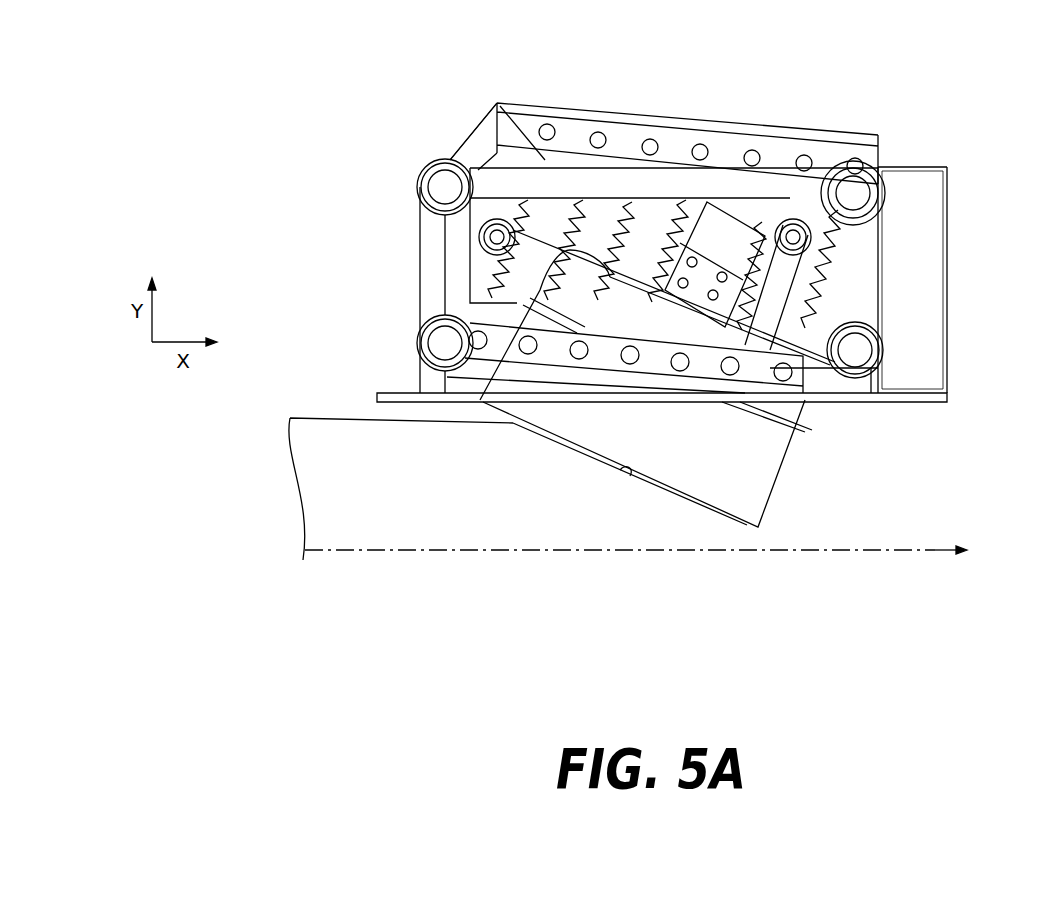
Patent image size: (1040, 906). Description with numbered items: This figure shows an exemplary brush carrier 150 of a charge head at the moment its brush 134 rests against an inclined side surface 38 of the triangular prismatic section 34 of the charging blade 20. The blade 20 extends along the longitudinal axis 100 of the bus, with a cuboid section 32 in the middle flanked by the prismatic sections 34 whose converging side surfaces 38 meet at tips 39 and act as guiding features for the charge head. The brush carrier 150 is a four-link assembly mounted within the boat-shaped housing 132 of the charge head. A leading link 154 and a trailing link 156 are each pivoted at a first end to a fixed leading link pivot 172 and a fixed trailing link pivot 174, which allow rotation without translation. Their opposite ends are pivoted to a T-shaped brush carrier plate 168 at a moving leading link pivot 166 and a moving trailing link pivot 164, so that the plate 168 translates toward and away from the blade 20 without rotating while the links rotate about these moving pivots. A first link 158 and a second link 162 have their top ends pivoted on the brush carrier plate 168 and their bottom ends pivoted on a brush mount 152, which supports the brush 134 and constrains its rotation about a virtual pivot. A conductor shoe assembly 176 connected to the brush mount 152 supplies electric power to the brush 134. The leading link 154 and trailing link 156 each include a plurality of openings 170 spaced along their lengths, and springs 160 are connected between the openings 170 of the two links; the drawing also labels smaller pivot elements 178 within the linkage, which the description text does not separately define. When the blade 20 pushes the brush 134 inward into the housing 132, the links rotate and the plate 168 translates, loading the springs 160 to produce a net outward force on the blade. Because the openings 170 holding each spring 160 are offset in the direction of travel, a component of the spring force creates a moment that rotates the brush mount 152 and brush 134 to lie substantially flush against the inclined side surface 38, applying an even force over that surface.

The charging blade 20 is at (364, 487).
The cuboid section 32 is at (453, 500).
The triangular prismatic section 34 is at (683, 533).
The inclined side surface 38 is at (627, 473).
The tip 39 is at (735, 515).
The longitudinal axis 100 is at (845, 552).
The housing 132 is at (948, 276).
The brush 134 is at (770, 475).
The brush carrier 150 is at (353, 108).
The brush mount 152 is at (628, 150).
The leading link 154 is at (772, 395).
The trailing link 156 is at (677, 127).
The first link 158 is at (527, 240).
The spring 160 is at (497, 102).
The second link 162 is at (817, 273).
The moving trailing link pivot 164 is at (860, 190).
The moving leading link pivot 166 is at (855, 350).
The brush carrier plate 168 is at (868, 243).
The opening 170 is at (603, 135).
The fixed leading link pivot 172 is at (445, 345).
The fixed trailing link pivot 174 is at (445, 187).
The conductor shoe assembly 176 is at (740, 222).
The idler pulley 178 is at (543, 180).